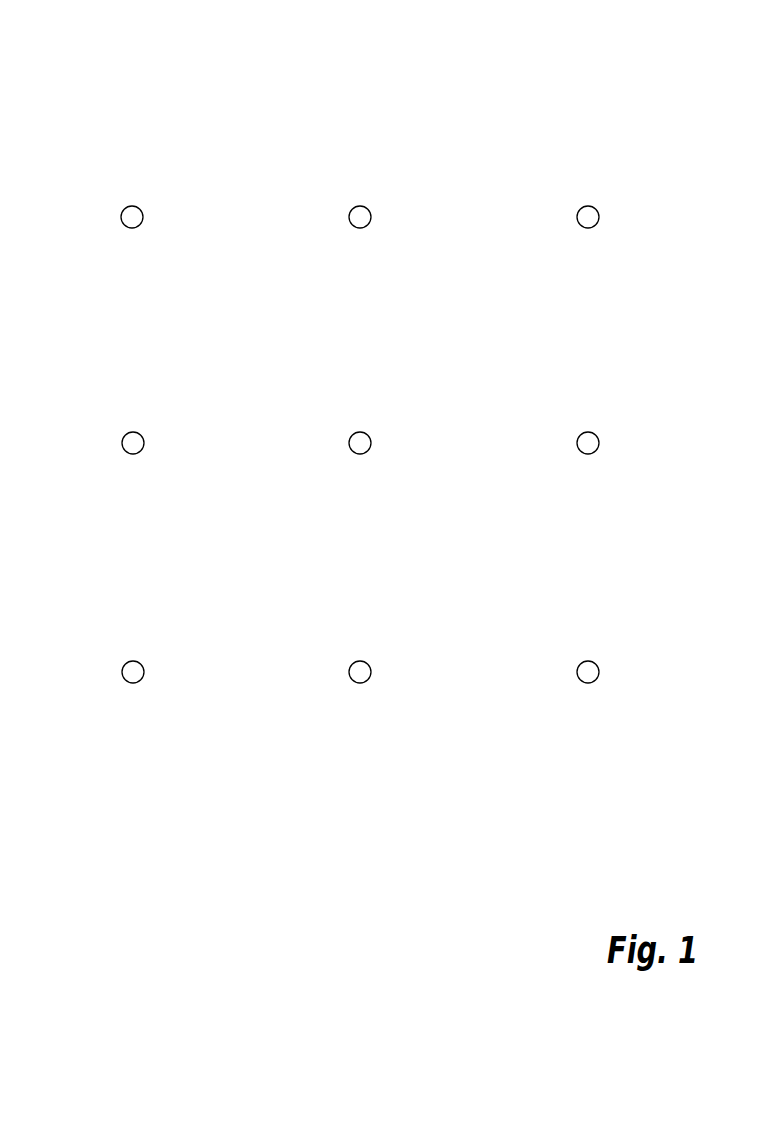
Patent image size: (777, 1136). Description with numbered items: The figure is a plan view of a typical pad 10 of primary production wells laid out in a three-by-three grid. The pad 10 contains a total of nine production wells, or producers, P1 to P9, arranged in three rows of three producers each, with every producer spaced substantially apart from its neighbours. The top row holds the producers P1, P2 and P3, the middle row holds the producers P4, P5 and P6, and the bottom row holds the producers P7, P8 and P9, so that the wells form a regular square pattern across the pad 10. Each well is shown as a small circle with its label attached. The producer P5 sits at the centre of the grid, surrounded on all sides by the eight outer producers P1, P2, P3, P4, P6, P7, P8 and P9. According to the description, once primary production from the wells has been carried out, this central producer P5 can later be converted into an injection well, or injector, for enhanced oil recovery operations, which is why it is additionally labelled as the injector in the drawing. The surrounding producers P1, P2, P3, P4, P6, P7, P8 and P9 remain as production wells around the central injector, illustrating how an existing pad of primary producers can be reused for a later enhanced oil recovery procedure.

The pad 10 is at (90, 128).
The production well P1 is at (144, 217).
The production well P2 is at (372, 217).
The production well P3 is at (600, 217).
The production well P4 is at (145, 443).
The central production well P5 is at (372, 443).
The production well P6 is at (600, 443).
The production well P7 is at (145, 672).
The production well P8 is at (372, 672).
The production well P9 is at (600, 672).